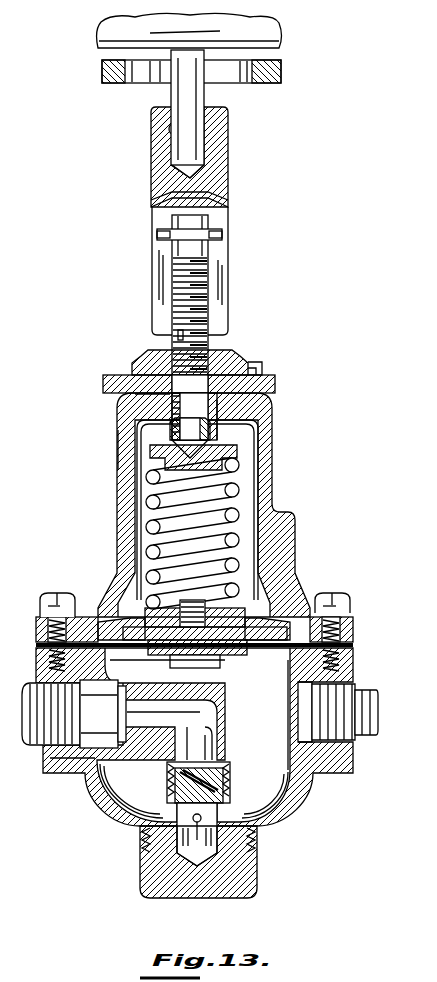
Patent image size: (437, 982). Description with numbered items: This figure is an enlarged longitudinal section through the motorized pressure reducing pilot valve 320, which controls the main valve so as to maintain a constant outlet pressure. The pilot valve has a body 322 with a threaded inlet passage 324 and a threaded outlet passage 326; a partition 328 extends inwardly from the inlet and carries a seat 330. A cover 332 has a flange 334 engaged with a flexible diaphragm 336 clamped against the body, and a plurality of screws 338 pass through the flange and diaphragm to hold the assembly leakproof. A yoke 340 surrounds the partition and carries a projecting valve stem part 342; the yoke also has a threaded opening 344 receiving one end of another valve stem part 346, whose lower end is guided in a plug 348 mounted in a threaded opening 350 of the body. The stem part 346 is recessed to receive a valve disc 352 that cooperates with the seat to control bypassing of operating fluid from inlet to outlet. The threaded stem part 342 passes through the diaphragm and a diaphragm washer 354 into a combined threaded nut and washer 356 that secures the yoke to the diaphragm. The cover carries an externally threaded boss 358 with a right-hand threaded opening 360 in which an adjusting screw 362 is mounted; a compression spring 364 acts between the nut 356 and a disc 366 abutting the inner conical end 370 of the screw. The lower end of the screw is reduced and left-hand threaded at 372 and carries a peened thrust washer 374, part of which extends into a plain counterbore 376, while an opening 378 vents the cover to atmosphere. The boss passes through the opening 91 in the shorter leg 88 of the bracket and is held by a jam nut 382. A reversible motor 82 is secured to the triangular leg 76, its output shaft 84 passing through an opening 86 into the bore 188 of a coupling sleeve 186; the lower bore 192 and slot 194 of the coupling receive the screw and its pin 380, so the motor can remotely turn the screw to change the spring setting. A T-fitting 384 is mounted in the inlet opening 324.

The reversible motor 82 is at (264, 36).
The triangular leg 76 is at (283, 66).
The opening 86 is at (141, 78).
The output shaft 84 is at (198, 93).
The bore 188 is at (170, 129).
The coupling sleeve 186 is at (240, 164).
The bore 192 is at (162, 197).
The slot 194 is at (159, 222).
The pin 380 is at (216, 233).
The adjusting screw 362 is at (209, 252).
The threaded opening 360 is at (177, 338).
The externally threaded boss 358 is at (223, 344).
The jam nut 382 is at (251, 361).
The opening 91 is at (255, 387).
The shorter leg 88 is at (275, 386).
The plain counterbore 376 is at (152, 419).
The left-hand threaded reduced end 372 is at (138, 441).
The vent opening 378 is at (119, 452).
The thrust washer 374 is at (262, 419).
The cover 332 is at (262, 441).
The inner conical end 370 is at (207, 452).
The disc 366 is at (240, 450).
The compression spring 364 is at (152, 512).
The pressure reducing pilot valve 320 is at (282, 493).
The screws 338 is at (70, 590).
The combined threaded nut and washer 356 is at (130, 613).
The valve stem part 342 is at (226, 618).
The flange 334 is at (352, 616).
The flexible diaphragm 336 is at (352, 645).
The T-fitting 384 is at (28, 692).
The diaphragm washer 354 is at (107, 649).
The yoke 340 is at (224, 678).
The threaded outlet passage 326 is at (176, 716).
The partition 328 is at (226, 738).
The seat 330 is at (228, 752).
The threaded inlet passage 324 is at (96, 756).
The valve disc 352 is at (166, 786).
The threaded opening 344 is at (226, 782).
The valve stem part 346 is at (219, 818).
The body 322 is at (300, 828).
The threaded opening 350 is at (246, 854).
The plug 348 is at (228, 884).